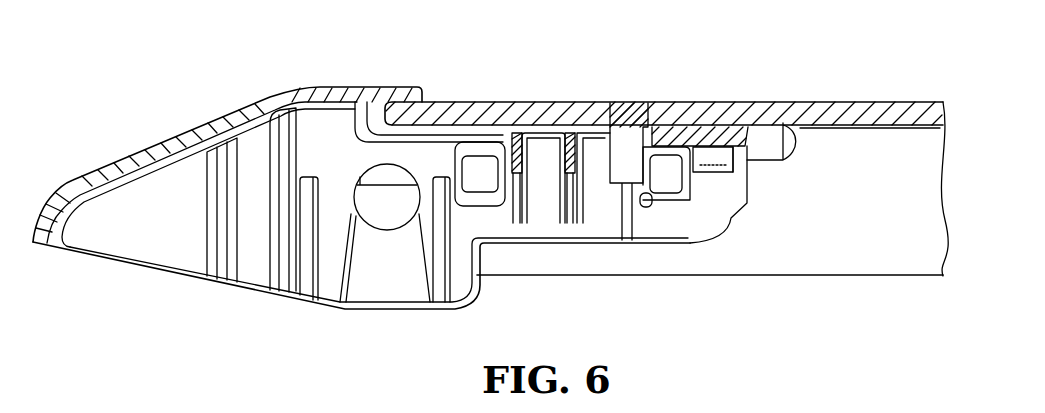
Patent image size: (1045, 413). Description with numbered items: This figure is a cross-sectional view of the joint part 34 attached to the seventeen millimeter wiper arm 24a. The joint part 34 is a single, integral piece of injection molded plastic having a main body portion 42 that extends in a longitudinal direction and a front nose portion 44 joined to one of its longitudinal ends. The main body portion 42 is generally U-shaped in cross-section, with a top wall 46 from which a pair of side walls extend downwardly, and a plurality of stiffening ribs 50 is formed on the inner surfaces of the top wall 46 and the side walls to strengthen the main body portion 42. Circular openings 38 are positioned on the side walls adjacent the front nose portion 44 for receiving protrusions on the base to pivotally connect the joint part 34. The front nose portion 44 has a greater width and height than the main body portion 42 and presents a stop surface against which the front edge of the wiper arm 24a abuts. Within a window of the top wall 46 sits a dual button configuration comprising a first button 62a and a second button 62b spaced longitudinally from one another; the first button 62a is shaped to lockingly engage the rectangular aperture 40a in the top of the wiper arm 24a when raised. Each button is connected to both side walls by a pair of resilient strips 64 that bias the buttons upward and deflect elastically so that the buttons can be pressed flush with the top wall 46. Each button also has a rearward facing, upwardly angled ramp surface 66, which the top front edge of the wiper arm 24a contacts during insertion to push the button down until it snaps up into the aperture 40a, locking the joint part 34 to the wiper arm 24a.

The joint part 34 is at (105, 120).
The front nose portion 44 is at (268, 97).
The top wall 46 is at (458, 130).
The 17 mm wiper arm 24a is at (793, 102).
The aperture 40a is at (617, 115).
The first button 62a is at (657, 120).
The second button 62b is at (707, 125).
The circular openings 38 is at (381, 203).
The stiffening ribs 50 is at (440, 273).
The main body portion 42 is at (657, 243).
The ramp surface 66 is at (650, 147).
The resilient strips 64 is at (713, 155).